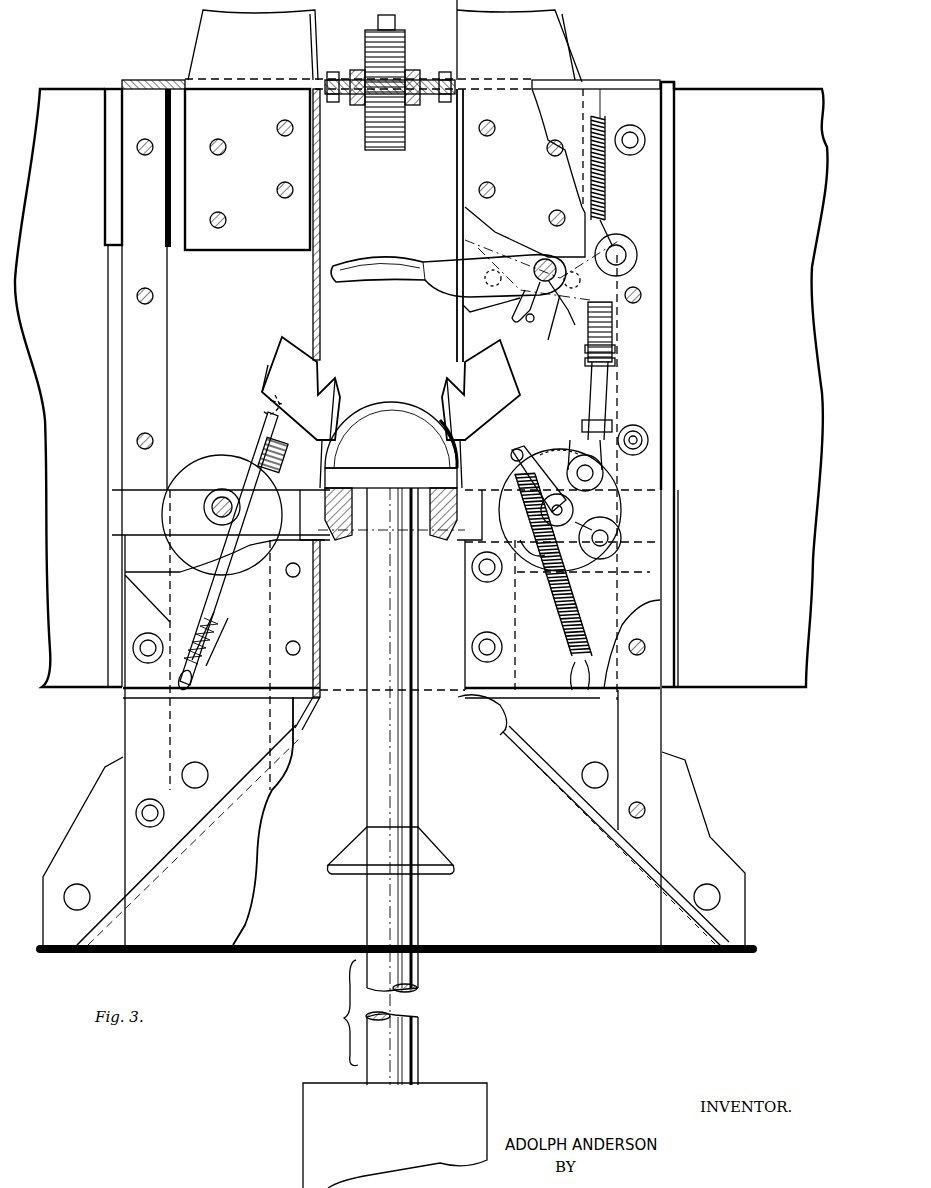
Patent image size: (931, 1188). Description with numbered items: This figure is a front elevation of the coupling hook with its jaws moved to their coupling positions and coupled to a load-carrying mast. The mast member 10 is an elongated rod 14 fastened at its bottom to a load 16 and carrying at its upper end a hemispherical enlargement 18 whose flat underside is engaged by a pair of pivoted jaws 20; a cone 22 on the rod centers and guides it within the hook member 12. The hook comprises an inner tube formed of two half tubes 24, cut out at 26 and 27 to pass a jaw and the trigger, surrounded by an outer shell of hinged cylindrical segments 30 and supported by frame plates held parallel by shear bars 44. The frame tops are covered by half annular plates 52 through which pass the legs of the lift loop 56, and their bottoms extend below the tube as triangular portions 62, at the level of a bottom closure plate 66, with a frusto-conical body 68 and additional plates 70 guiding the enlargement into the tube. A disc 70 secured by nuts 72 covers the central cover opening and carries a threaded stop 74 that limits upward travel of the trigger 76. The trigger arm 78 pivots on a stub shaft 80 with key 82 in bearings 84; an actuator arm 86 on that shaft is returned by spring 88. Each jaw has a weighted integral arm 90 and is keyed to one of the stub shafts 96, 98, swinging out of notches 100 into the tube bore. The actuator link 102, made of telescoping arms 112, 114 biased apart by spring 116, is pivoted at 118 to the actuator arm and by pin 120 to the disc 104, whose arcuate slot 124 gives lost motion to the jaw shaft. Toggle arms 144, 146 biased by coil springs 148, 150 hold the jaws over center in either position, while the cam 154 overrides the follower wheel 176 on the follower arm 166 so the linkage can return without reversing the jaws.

The mast member 10 is at (444, 954).
The hook member 12 is at (696, 730).
The elongated rod 14 is at (420, 806).
The load 16 is at (468, 1083).
The enlargement 18 is at (400, 444).
The pivoted jaws 20 is at (346, 548).
The cone 22 is at (440, 852).
The half tubes 24 is at (320, 632).
The cut-outs 26 is at (338, 398).
The cut-outs 27 is at (458, 244).
The cylindrical segments 30 is at (75, 288).
The shear bars 44 is at (158, 353).
The half annular plates 52 is at (600, 82).
The lift loop 56 is at (572, 32).
The triangular portions 62 is at (282, 750).
The bottom closure plate 66 is at (120, 698).
The frusto-conical body 68 is at (598, 840).
The additional plates / disc 70 is at (412, 100).
The nuts 72 is at (333, 72).
The threaded stop 74 is at (365, 130).
The trigger 76 is at (386, 258).
The arm 78 is at (458, 306).
The stub shaft 80 is at (510, 319).
The key 82 is at (561, 303).
The bearings 84 is at (561, 325).
The actuator arm 86 is at (604, 224).
The spring 88 is at (602, 186).
The integral arm 90 is at (162, 576).
The stub shaft 96 is at (591, 509).
The stub shaft 98 is at (208, 520).
The notches 100 is at (272, 362).
The actuator link 102 is at (606, 395).
The disc 104 is at (553, 564).
The telescoping arm 112 is at (610, 414).
The telescoping arm 114 is at (610, 370).
The spring 116 is at (612, 348).
The pivotal connection 118 is at (637, 257).
The pin 120 is at (604, 474).
The arcuate slot 124 is at (538, 469).
The toggle arm 144 is at (554, 428).
The toggle arm 146 is at (262, 438).
The coil spring 148 is at (580, 625).
The coil spring 150 is at (198, 648).
The cam 154 is at (575, 510).
The cam follower arm 166 is at (612, 548).
The cam follower wheel 176 is at (522, 532).